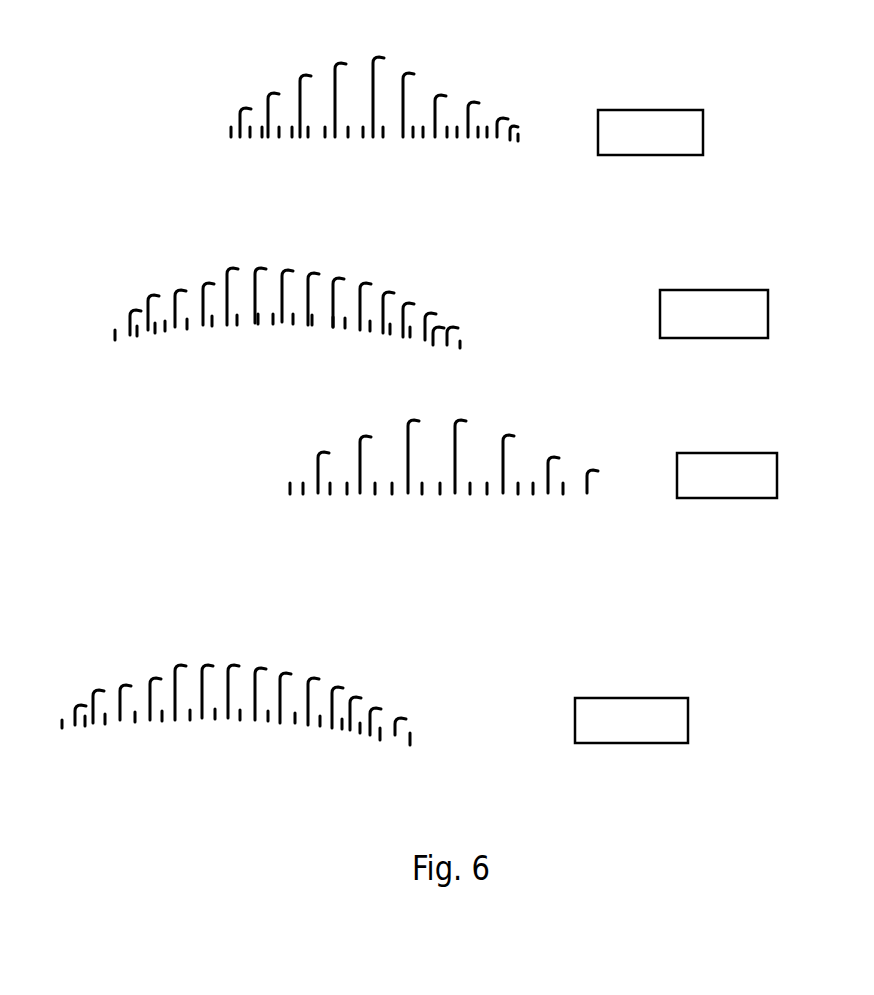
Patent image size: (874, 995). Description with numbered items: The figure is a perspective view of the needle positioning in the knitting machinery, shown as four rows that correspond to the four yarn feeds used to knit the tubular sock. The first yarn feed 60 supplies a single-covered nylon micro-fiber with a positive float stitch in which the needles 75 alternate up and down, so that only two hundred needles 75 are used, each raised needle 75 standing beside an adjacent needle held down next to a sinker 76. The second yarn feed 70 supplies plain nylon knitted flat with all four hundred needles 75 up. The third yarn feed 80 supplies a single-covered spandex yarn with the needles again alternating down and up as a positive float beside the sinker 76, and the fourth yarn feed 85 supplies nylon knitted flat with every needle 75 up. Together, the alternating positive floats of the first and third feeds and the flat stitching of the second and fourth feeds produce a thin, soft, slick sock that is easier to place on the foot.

The first yarn feed 60 is at (703, 131).
The second yarn feed 70 is at (768, 313).
The needles 75 is at (440, 97).
The sinker 76 is at (507, 133).
The third yarn feed 80 is at (777, 475).
The fourth yarn feed 85 is at (688, 720).